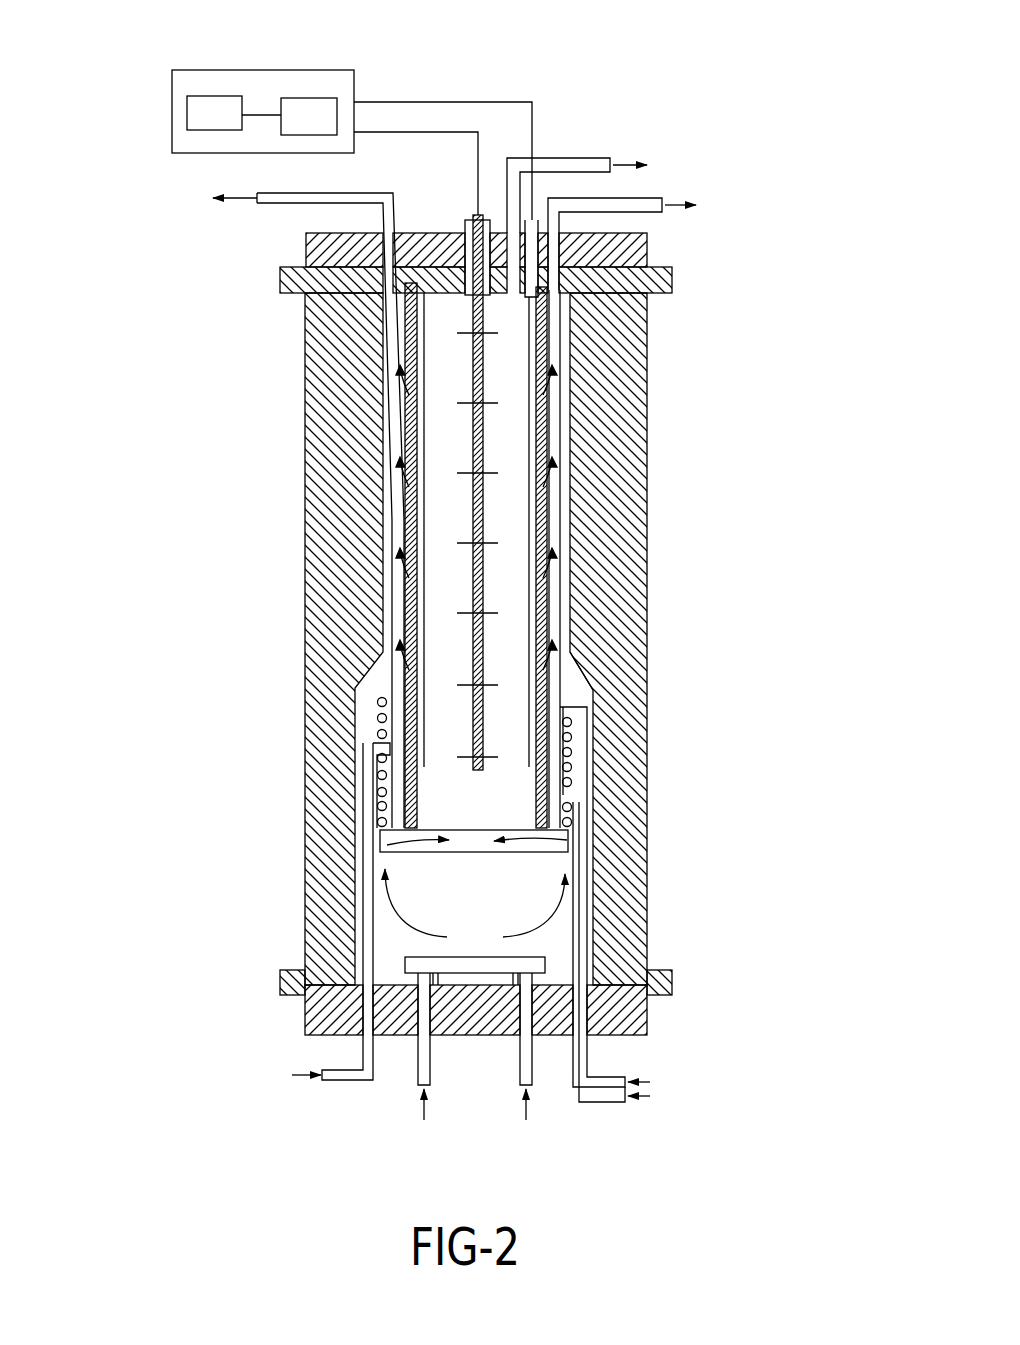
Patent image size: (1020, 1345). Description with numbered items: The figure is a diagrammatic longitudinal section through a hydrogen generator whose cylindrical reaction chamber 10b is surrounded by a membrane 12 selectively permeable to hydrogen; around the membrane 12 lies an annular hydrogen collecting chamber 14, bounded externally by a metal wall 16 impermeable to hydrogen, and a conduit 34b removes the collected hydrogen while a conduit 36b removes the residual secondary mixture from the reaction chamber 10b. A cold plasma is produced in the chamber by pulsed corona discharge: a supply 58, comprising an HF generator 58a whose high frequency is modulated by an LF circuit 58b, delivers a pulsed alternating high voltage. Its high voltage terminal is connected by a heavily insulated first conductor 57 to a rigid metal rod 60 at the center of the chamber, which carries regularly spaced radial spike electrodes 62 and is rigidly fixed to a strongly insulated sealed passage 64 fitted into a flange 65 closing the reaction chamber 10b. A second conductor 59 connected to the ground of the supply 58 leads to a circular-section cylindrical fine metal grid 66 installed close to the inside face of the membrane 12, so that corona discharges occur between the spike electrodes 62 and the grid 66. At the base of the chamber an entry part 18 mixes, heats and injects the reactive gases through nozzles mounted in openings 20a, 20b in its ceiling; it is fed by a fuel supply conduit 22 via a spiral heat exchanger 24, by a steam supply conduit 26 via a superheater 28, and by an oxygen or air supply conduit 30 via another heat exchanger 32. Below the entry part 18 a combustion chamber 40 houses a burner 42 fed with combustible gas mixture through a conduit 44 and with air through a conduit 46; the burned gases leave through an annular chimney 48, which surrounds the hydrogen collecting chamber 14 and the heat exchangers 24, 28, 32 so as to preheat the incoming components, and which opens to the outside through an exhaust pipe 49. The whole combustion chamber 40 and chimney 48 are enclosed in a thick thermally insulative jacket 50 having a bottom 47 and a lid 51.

The supply 58 is at (262, 76).
The HF generator 58a is at (298, 122).
The LF circuit 58b is at (195, 115).
The second conductor 59 is at (390, 100).
The first conductor 57 is at (412, 130).
The sealed passage 64 is at (483, 213).
The radial electrodes 62 is at (490, 543).
The outlet conduit 36b is at (609, 189).
The hydrogen removal conduit 34b is at (657, 239).
The exhaust pipe 49 is at (288, 504).
The lid 51 is at (648, 250).
The flange 65 is at (650, 288).
The thermally insulative jacket 50 is at (625, 623).
The annular chimney 48 is at (573, 698).
The grid 66 is at (530, 555).
The rigid metal rod 60 is at (445, 495).
The membrane 12 is at (545, 490).
The hydrogen collecting chamber 14 is at (553, 412).
The metal wall 16 is at (562, 345).
The reaction chamber 10b is at (550, 592).
The superheater 28 is at (378, 757).
The opening 20b is at (415, 816).
The heat exchanger 32 is at (573, 747).
The opening 20a is at (527, 826).
The spiral heat exchanger 24 is at (570, 830).
The entry part 18 is at (483, 845).
The combustion chamber 40 is at (505, 924).
The burner 42 is at (422, 960).
The air conduit 46 is at (425, 1070).
The combustible gas conduit 44 is at (529, 1070).
The bottom 47 is at (625, 1020).
The steam supply conduit 26 is at (306, 916).
The oxygen supply conduit 30 is at (643, 947).
The fuel supply conduit 22 is at (645, 961).